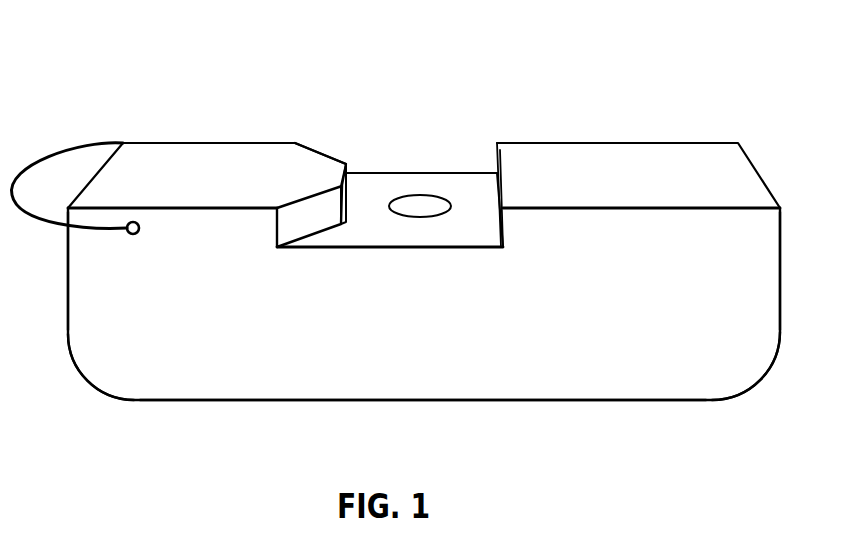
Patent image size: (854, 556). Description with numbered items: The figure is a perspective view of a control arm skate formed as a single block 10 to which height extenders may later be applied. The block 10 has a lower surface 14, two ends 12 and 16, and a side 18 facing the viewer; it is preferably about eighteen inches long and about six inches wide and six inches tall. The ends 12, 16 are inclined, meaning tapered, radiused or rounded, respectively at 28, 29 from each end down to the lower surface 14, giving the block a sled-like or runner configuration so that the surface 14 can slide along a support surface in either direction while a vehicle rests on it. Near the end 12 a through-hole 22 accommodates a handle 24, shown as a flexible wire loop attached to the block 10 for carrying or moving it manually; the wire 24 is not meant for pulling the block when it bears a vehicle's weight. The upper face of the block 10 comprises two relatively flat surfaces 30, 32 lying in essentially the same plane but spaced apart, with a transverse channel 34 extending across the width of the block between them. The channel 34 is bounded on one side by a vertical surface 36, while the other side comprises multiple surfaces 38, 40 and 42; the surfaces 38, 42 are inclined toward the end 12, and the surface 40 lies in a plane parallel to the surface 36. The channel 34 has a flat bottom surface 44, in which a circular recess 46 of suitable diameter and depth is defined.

The block 10 is at (609, 79).
The end 12 is at (67, 291).
The lower surface 14 is at (521, 401).
The end 16 is at (781, 286).
The side 18 is at (393, 339).
The through-hole 22 is at (133, 221).
The handle 24 is at (63, 153).
The inclined portion 28 is at (107, 391).
The inclined portion 29 is at (740, 391).
The flat surface 30 is at (688, 148).
The flat surface 32 is at (158, 148).
The transverse channel 34 is at (422, 150).
The vertical surface 36 is at (497, 163).
The inclined surface 38 is at (312, 217).
The surface 40 is at (343, 190).
The inclined surface 42 is at (325, 153).
The flat bottom surface 44 is at (447, 183).
The circular recess 46 is at (420, 205).